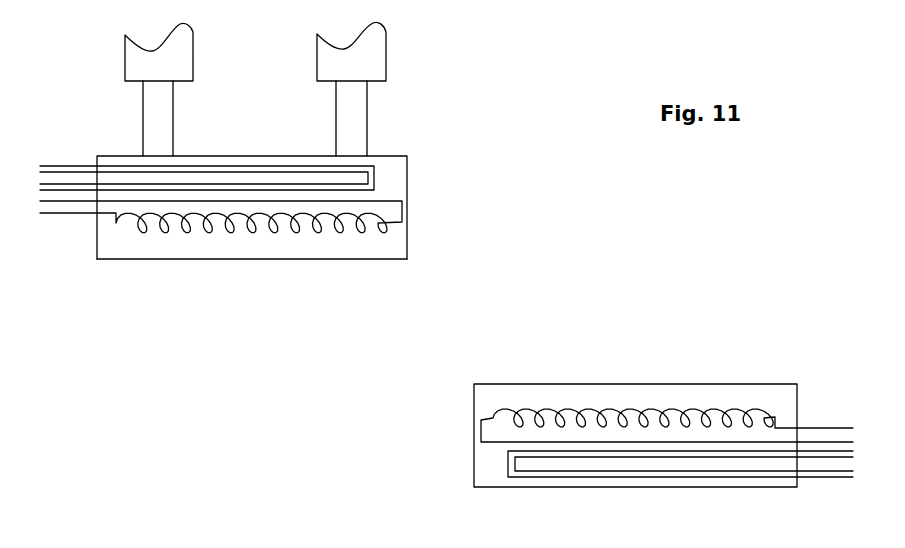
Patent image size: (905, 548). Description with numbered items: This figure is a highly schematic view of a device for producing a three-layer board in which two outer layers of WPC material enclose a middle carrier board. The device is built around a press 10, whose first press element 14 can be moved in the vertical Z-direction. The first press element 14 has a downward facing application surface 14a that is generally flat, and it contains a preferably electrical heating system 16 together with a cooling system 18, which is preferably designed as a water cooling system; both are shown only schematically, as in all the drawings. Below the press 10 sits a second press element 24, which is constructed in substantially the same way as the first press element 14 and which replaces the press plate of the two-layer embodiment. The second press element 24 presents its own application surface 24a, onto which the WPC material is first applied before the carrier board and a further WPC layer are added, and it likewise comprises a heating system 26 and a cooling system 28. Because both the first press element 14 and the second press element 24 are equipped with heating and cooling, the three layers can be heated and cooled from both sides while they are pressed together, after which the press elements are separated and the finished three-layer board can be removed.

The press 10 is at (291, 179).
The first press element 14 is at (398, 177).
The application surface 14a is at (277, 259).
The heating system 16 is at (198, 230).
The cooling system 18 is at (243, 166).
The second press element 24 is at (540, 429).
The application surface 24a is at (609, 384).
The heating system 26 is at (481, 428).
The cooling system 28 is at (662, 473).